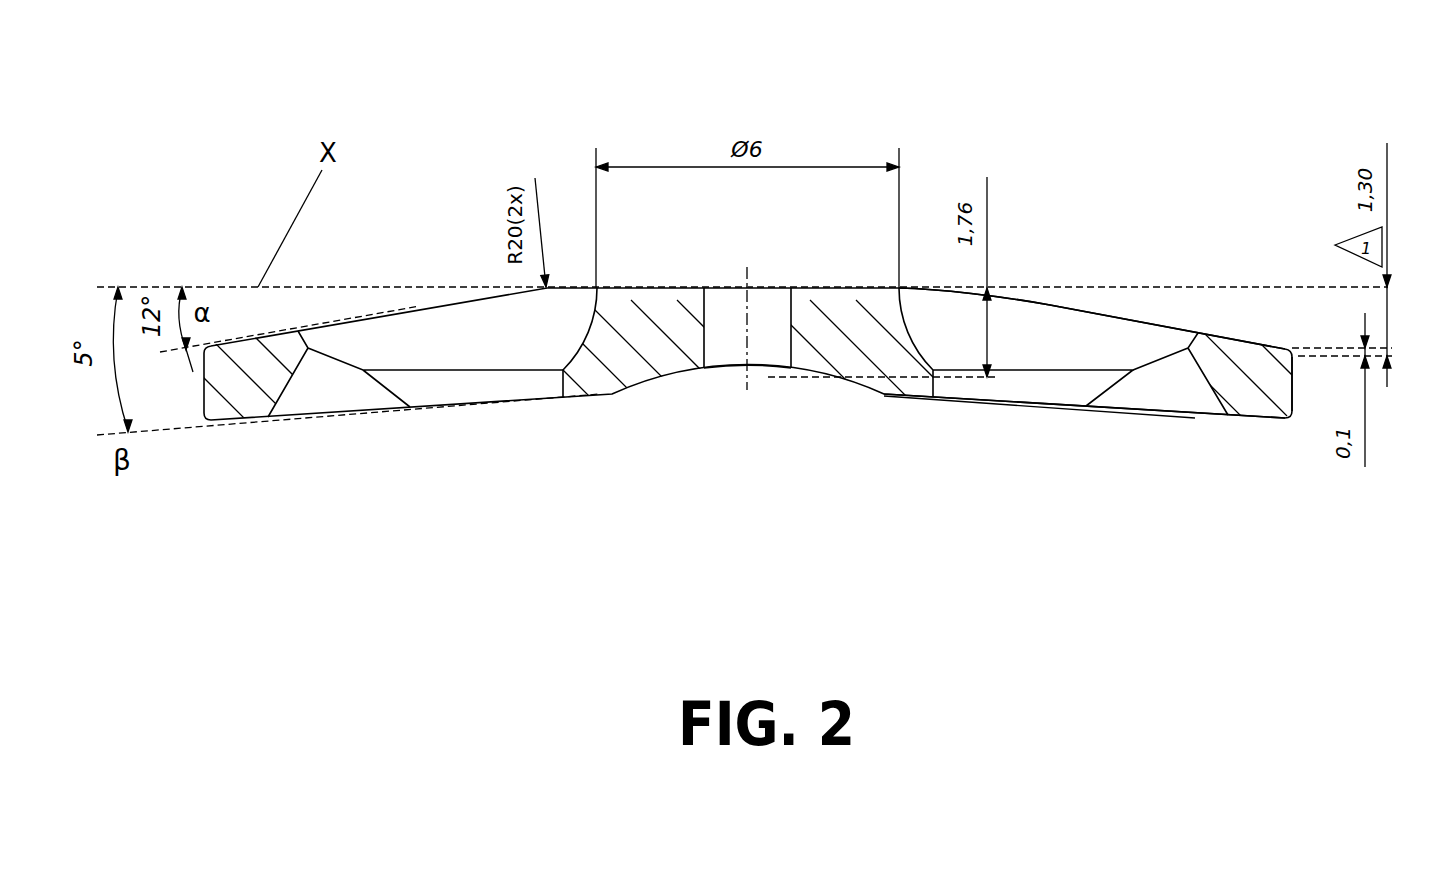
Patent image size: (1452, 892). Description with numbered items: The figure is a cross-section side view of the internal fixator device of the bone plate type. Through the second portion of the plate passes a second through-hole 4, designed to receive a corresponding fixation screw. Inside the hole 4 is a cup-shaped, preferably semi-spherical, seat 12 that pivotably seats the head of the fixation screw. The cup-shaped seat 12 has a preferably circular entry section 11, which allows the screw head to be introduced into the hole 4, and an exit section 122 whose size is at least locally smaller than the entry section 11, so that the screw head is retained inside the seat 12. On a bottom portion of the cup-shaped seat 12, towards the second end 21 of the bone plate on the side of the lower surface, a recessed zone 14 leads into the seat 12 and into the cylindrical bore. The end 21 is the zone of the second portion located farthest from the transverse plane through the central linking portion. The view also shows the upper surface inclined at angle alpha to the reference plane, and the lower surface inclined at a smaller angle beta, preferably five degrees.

The second through-hole 4 is at (1013, 297).
The entry section 11 is at (900, 287).
The cup-shaped seat 12 is at (1178, 352).
The exit section 122 is at (932, 383).
The recessed zone 14 is at (1202, 383).
The second end 21 is at (1292, 393).